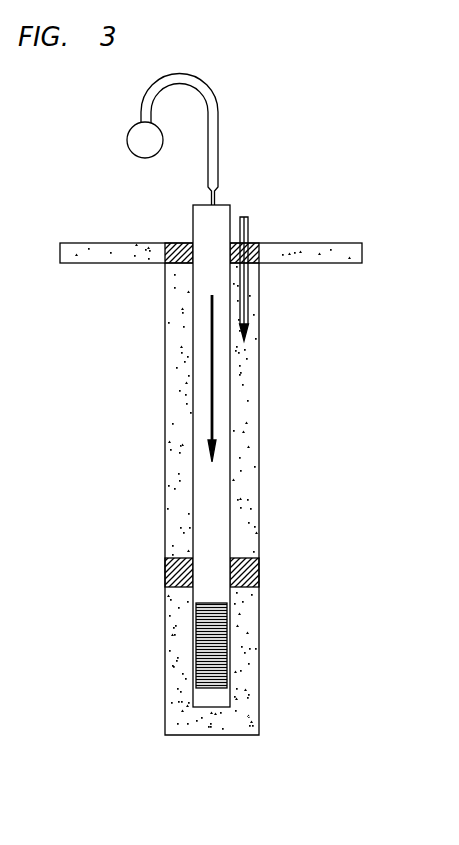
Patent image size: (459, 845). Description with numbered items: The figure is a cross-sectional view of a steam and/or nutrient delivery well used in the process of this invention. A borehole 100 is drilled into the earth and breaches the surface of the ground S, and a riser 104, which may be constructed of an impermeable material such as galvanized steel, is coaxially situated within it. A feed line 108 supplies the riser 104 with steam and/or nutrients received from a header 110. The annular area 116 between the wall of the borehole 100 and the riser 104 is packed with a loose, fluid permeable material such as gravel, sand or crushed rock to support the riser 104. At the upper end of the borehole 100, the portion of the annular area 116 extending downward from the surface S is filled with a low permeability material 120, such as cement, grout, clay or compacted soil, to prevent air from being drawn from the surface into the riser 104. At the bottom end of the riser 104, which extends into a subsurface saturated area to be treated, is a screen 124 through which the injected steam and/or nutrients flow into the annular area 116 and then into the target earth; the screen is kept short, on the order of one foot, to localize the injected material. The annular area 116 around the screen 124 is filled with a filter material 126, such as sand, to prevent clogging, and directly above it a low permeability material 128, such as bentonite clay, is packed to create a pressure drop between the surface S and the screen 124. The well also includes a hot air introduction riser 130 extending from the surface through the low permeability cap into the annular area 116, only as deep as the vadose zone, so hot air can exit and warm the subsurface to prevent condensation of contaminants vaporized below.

The surface of the ground S is at (333, 243).
The borehole 100 is at (260, 307).
The riser 104 is at (231, 362).
The feed line 108 is at (218, 137).
The header 110 is at (125, 141).
The annular area 116 is at (172, 439).
The low permeability material 120 is at (172, 242).
The screen 124 is at (232, 643).
The filter material 126 is at (175, 657).
The low permeability material 128 is at (165, 568).
The hot air introduction riser 130 is at (250, 226).